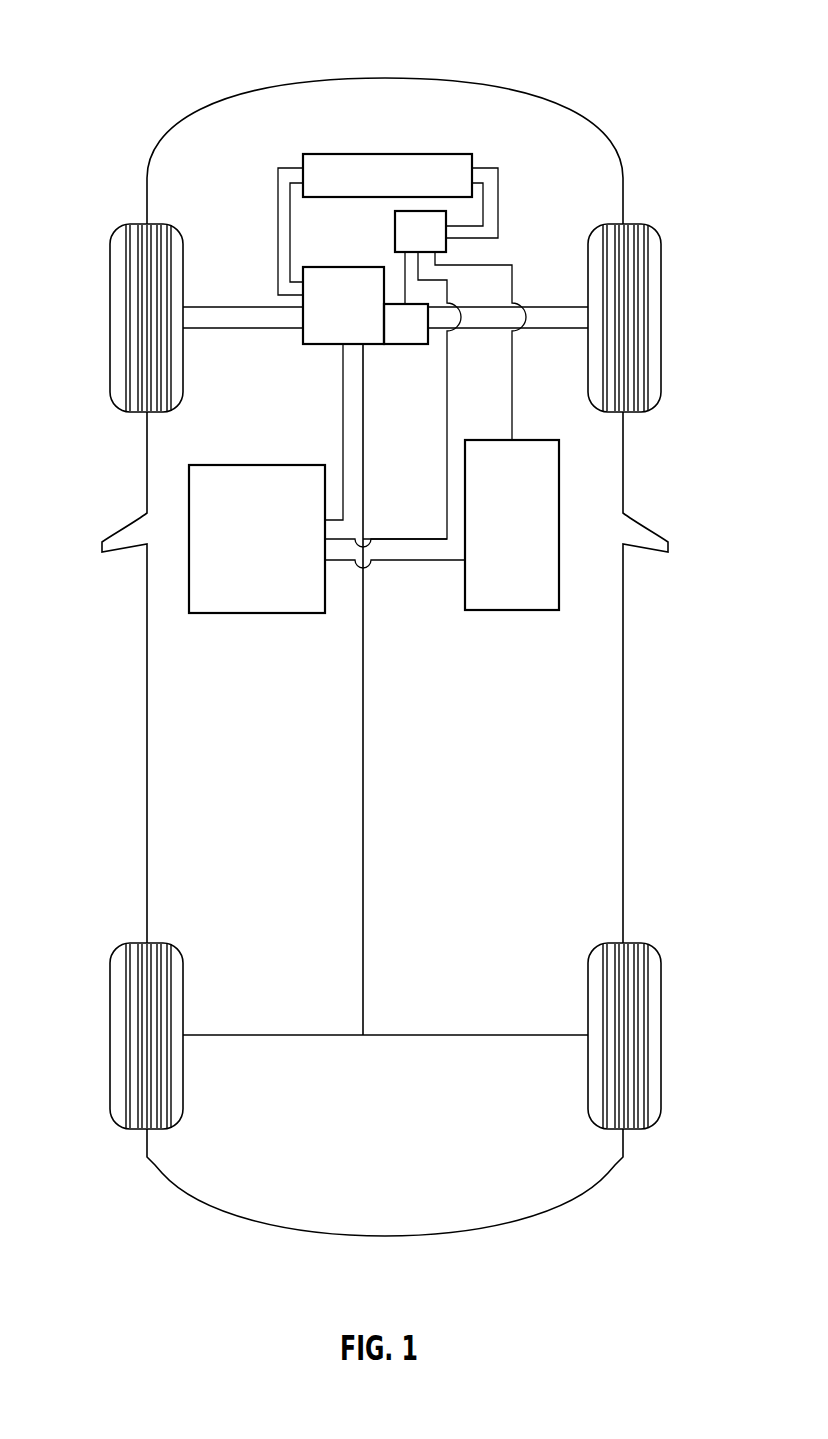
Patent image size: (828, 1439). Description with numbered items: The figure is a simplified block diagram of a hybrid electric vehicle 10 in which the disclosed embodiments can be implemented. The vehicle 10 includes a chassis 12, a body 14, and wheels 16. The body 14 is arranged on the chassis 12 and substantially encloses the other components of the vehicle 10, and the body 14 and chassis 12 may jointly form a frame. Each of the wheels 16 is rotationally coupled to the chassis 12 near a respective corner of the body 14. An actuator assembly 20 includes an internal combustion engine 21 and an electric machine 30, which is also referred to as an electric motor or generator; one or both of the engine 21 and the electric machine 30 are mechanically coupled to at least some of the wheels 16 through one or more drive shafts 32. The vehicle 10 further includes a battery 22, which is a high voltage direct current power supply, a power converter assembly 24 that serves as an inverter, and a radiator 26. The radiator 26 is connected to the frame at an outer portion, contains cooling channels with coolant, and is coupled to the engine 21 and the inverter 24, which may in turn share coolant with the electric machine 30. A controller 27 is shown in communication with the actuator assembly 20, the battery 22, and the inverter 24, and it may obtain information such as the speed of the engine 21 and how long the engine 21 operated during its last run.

The vehicle 10 is at (104, 50).
The chassis 12 is at (364, 768).
The body 14 is at (147, 490).
The wheels 16 is at (110, 270).
The actuator assembly 20 is at (411, 352).
The internal combustion engine 21 is at (343, 393).
The battery 22 is at (512, 525).
The power converter assembly 24 is at (444, 375).
The radiator 26 is at (388, 224).
The controller 27 is at (327, 539).
The electric machine 30 is at (406, 324).
The drive shaft 32 is at (243, 304).